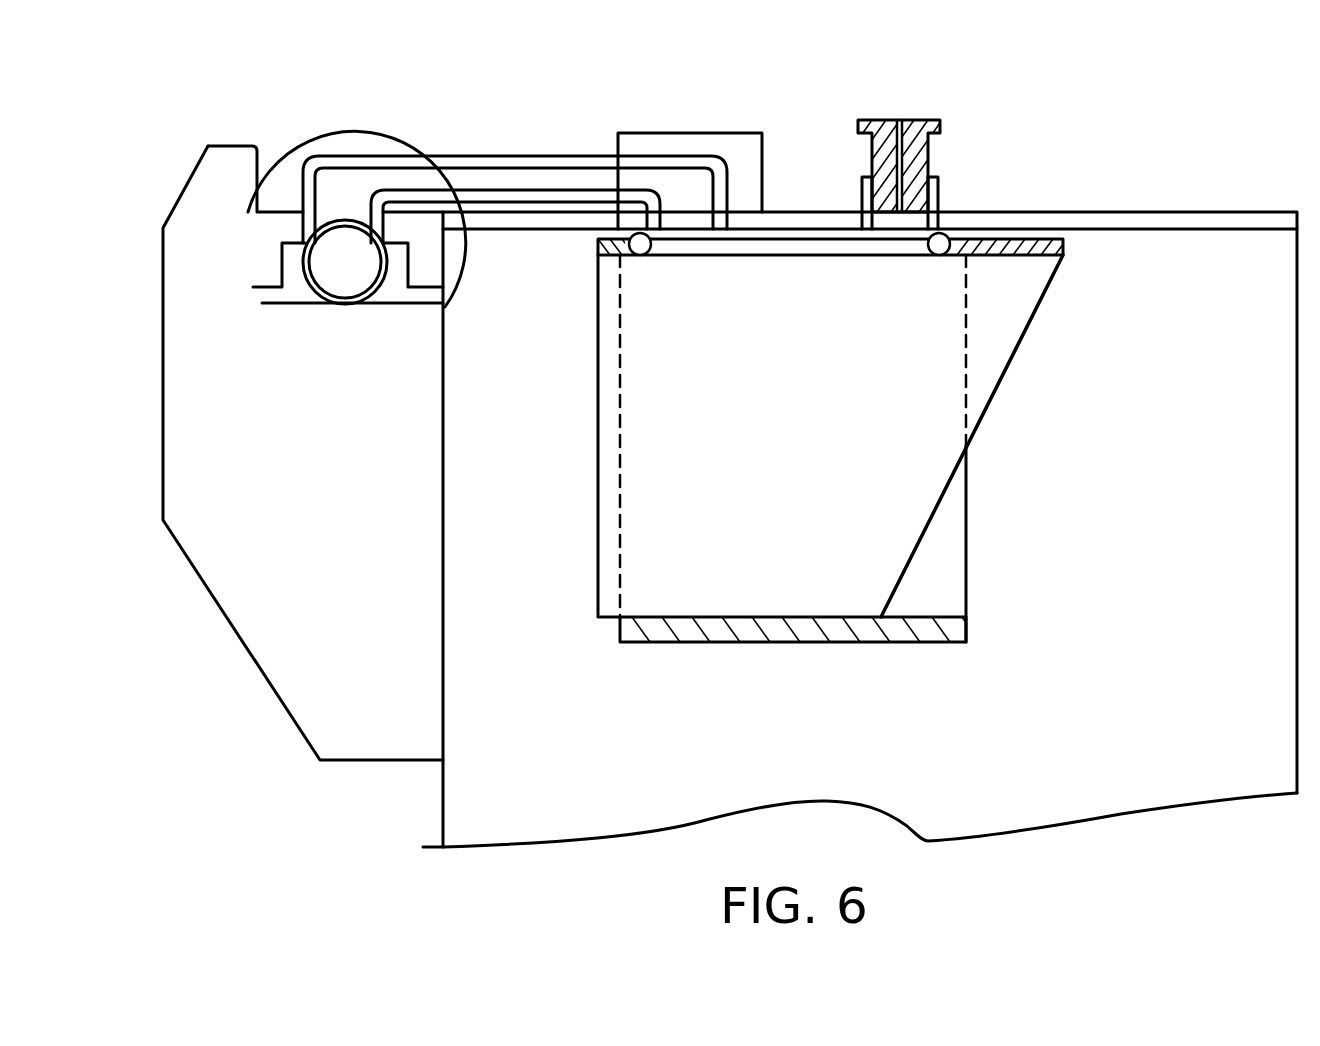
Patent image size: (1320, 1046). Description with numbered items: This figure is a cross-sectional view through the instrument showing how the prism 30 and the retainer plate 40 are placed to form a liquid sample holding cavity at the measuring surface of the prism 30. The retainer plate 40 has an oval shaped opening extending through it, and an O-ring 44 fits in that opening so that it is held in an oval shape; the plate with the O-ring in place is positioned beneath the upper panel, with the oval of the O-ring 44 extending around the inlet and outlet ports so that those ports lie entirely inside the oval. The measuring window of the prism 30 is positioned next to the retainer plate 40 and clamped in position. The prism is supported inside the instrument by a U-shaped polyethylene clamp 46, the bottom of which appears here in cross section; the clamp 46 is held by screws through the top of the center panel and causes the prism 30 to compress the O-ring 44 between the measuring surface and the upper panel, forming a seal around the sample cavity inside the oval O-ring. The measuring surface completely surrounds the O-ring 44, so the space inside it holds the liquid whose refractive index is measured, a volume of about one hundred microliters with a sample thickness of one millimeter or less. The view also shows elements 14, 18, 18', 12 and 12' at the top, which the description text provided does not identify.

The supply tube 14 is at (392, 156).
The connector block 18 is at (690, 134).
The second tube 18' is at (584, 141).
The fastening bolt 12 is at (930, 148).
The bolt support posts 12' is at (953, 181).
The retainer plate 40 is at (1038, 240).
The O-ring 44 is at (640, 254).
The prism 30 is at (598, 514).
The U-shaped polyethylene clamp 46 is at (658, 642).